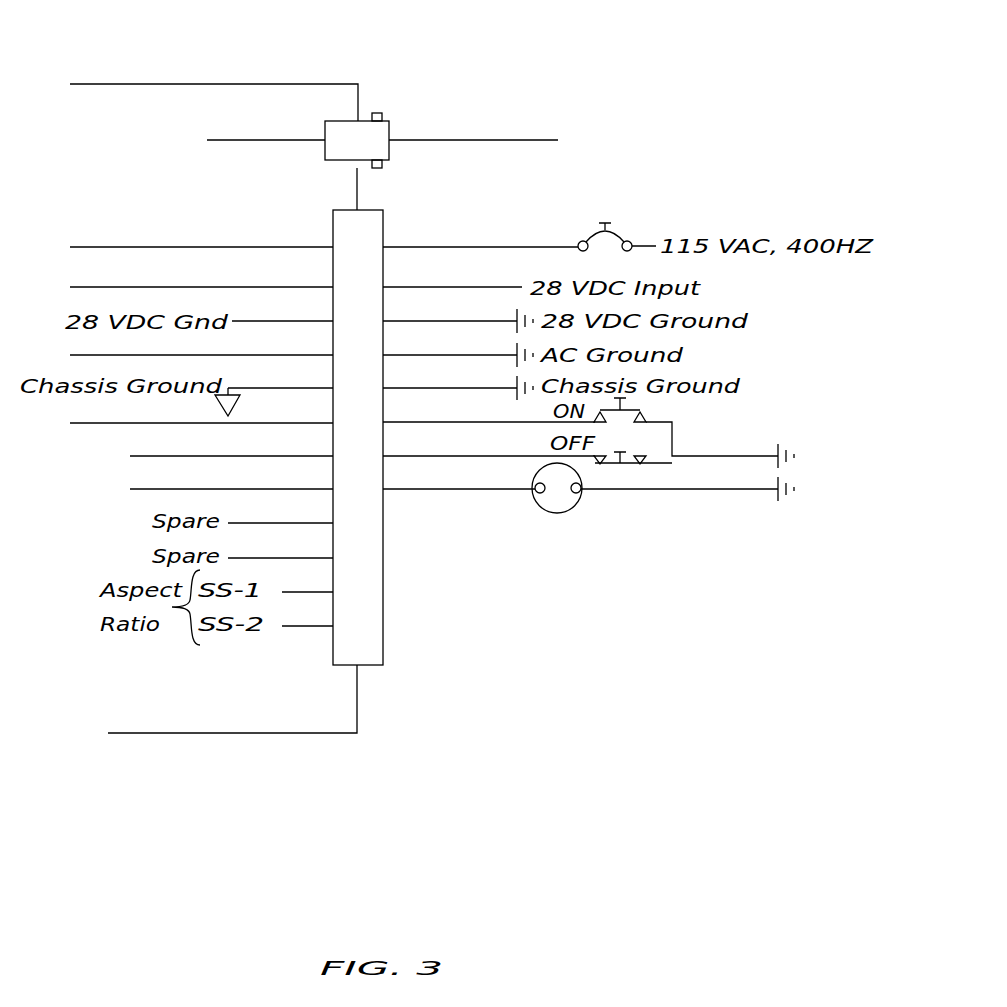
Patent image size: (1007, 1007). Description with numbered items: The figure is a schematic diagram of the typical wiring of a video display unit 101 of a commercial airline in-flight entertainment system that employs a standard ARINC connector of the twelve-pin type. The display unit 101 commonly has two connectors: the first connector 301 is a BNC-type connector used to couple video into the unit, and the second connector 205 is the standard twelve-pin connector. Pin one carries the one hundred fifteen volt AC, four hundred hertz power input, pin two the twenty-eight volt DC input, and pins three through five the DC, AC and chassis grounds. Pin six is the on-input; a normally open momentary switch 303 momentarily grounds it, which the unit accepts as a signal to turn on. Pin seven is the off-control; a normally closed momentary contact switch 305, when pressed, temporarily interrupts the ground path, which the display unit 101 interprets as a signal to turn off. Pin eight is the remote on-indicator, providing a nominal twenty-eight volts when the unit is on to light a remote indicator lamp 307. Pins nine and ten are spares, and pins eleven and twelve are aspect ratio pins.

The video display unit 101 is at (173, 84).
The second connector 205 is at (383, 642).
The first connector 301 is at (390, 121).
The normally open momentary switch 303 is at (670, 409).
The normally closed momentary contact switch 305 is at (668, 460).
The remote indicator lamp 307 is at (573, 508).